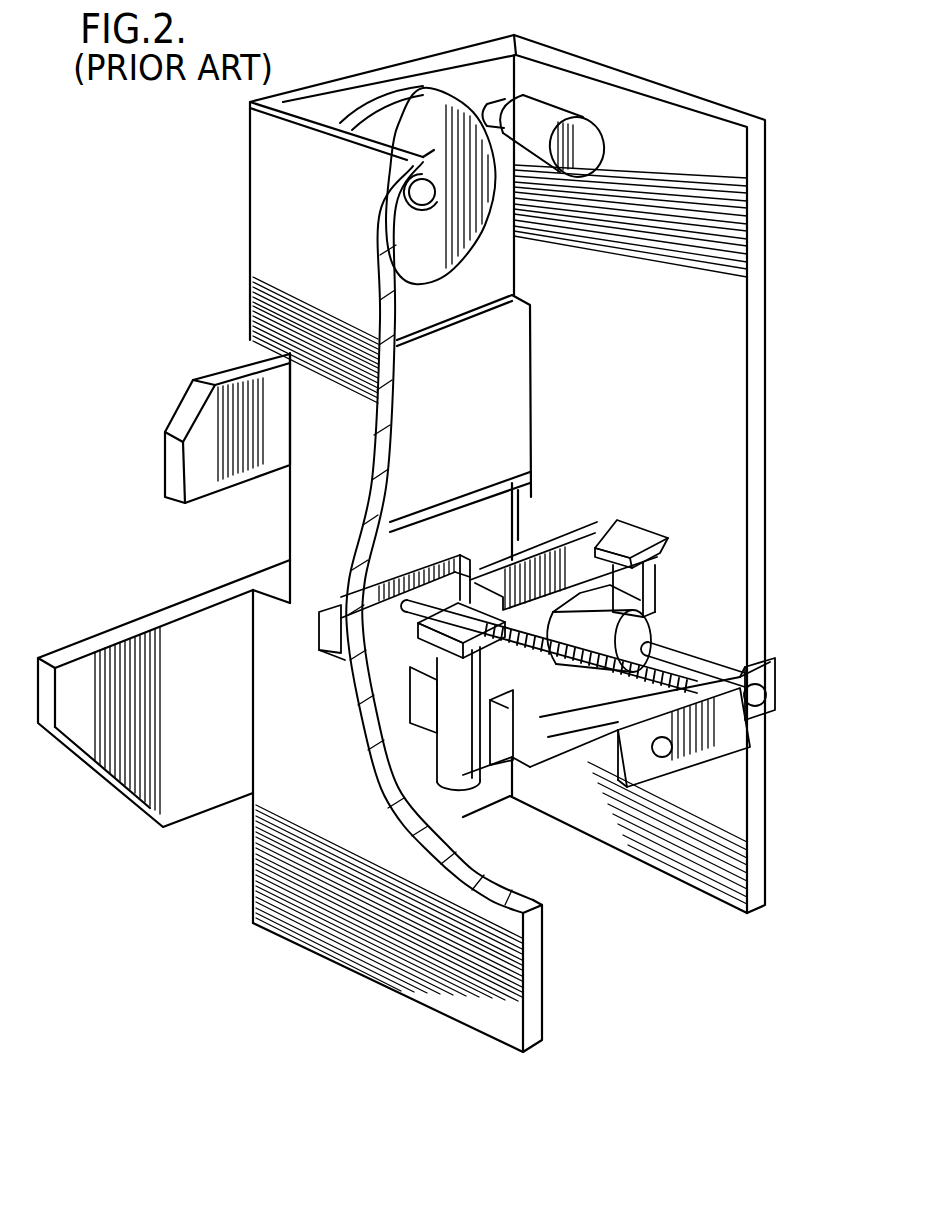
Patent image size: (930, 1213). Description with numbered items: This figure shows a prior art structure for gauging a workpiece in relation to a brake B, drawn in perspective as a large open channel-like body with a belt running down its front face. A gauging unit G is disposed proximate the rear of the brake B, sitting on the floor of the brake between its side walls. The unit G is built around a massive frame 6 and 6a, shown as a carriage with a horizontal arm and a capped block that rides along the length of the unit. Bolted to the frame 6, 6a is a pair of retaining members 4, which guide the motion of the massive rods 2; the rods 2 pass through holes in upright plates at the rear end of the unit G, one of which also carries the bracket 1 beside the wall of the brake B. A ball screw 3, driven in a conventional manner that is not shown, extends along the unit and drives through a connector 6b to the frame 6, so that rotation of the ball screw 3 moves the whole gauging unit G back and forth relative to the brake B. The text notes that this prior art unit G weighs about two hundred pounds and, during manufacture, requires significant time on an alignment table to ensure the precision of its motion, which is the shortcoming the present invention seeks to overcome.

The brake B is at (773, 263).
The gauging unit G is at (587, 787).
The bracket plate 1 is at (777, 677).
The massive rods 2 is at (775, 700).
The ball screw 3 is at (693, 680).
The retaining members 4 is at (667, 620).
The massive frame 6 is at (643, 538).
The massive frame 6a is at (580, 530).
The connector 6b is at (575, 705).